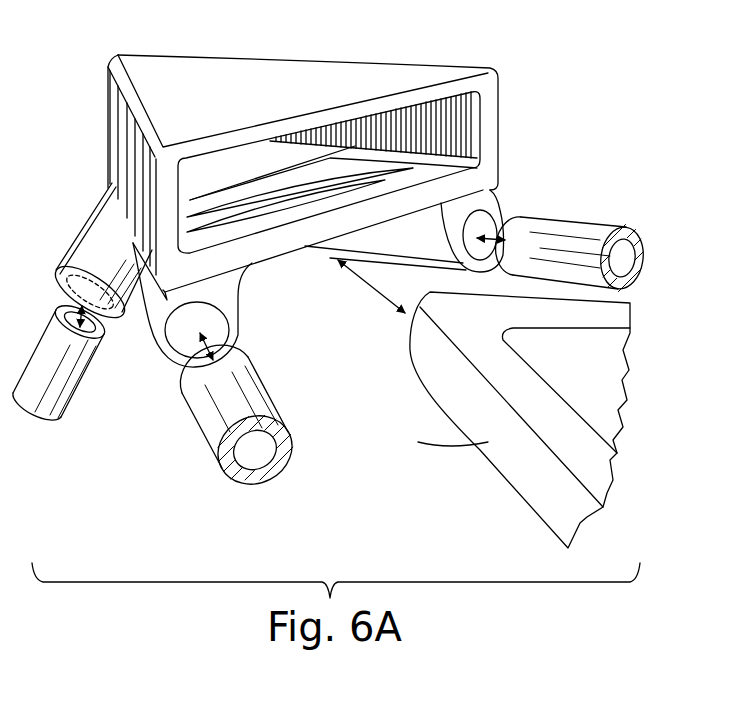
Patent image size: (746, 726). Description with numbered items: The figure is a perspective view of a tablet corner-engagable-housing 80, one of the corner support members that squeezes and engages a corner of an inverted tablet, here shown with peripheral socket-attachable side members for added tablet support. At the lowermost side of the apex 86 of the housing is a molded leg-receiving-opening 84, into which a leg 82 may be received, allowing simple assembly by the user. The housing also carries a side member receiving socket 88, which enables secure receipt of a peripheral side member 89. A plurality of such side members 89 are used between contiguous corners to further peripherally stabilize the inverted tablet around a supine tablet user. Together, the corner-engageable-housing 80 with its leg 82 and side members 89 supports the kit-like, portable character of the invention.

The tablet corner-engagable-housing 80 is at (184, 45).
The leg 82 is at (67, 393).
The leg-receiving-opening 84 is at (77, 290).
The apex 86 is at (113, 56).
The side member receiving socket 88 is at (218, 335).
The peripheral side member 89 is at (250, 383).